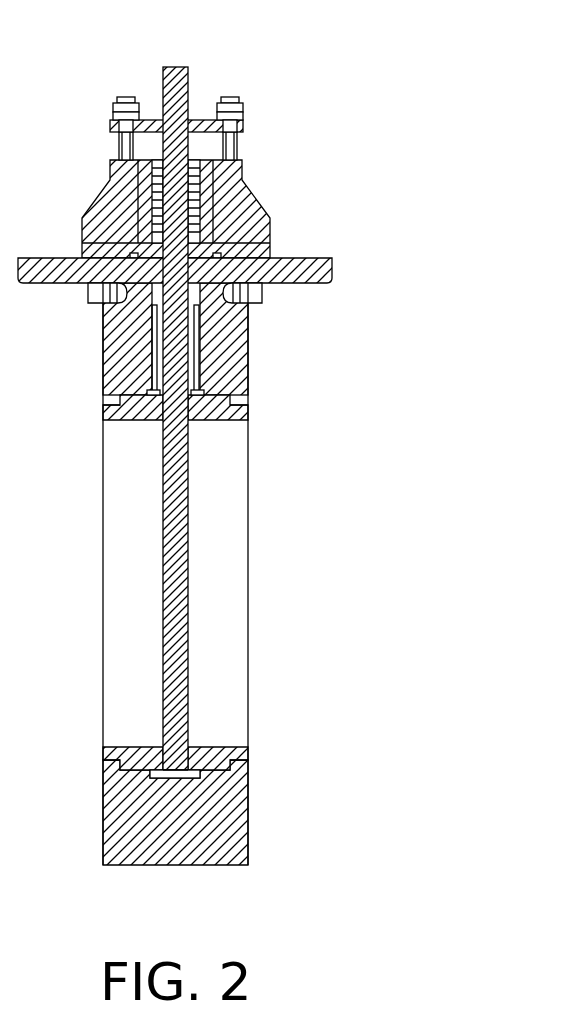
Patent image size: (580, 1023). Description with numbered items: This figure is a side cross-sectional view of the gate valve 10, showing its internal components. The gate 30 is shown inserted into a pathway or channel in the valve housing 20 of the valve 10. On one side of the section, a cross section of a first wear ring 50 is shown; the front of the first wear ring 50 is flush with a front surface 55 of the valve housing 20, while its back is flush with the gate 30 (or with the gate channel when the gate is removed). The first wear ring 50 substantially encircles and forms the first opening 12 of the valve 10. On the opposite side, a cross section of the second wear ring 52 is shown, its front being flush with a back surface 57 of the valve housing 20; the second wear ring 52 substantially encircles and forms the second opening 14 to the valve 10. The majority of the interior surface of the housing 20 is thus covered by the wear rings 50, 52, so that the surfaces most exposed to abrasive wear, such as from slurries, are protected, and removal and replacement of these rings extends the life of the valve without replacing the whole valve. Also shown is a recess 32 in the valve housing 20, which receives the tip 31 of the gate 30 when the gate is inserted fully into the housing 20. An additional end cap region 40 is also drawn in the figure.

The valve 10 is at (221, 466).
The first opening 12 is at (248, 567).
The second opening 14 is at (103, 567).
The valve housing 20 is at (333, 268).
The gate 30 is at (181, 67).
The tip 31 is at (183, 778).
The recess 32 is at (185, 778).
The end cap 40 is at (248, 405).
The first wear ring 50 is at (248, 410).
The second wear ring 52 is at (103, 409).
The front surface 55 is at (248, 350).
The back surface 57 is at (103, 358).